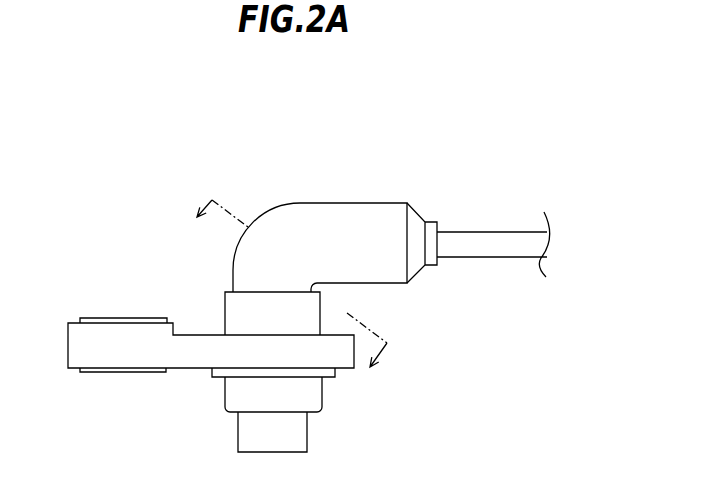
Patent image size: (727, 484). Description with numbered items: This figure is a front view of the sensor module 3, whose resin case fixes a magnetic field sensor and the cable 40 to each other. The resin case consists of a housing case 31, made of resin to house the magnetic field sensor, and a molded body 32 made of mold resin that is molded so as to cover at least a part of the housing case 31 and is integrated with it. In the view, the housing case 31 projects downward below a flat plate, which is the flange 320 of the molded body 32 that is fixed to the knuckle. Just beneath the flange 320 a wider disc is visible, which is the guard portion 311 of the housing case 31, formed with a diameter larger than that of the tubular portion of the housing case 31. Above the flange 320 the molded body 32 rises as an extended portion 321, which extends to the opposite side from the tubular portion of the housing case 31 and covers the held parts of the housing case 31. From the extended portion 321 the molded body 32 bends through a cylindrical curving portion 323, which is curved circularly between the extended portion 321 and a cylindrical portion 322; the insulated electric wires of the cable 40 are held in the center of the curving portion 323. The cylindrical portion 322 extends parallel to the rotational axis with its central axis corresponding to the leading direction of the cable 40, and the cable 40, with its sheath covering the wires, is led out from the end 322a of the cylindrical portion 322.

The sensor module 3 is at (148, 147).
The molded body 32 is at (242, 190).
The curving portion 323 is at (280, 242).
The cylindrical portion 322 is at (392, 217).
The end of the cylindrical portion 322a is at (454, 208).
The extended portion 321 is at (232, 310).
The cable 40 is at (507, 247).
The housing case 31 is at (335, 423).
The flange 320 is at (208, 357).
The guard portion 311 is at (220, 378).